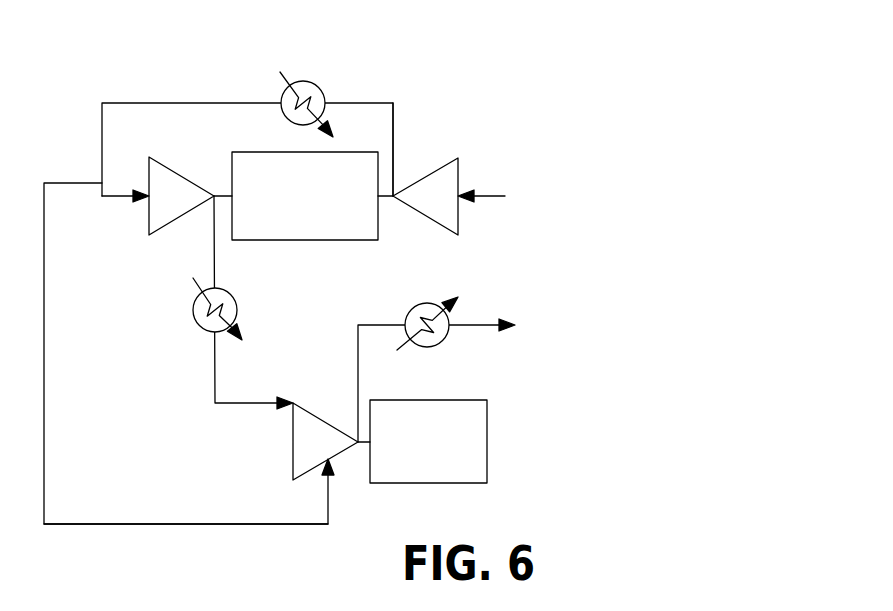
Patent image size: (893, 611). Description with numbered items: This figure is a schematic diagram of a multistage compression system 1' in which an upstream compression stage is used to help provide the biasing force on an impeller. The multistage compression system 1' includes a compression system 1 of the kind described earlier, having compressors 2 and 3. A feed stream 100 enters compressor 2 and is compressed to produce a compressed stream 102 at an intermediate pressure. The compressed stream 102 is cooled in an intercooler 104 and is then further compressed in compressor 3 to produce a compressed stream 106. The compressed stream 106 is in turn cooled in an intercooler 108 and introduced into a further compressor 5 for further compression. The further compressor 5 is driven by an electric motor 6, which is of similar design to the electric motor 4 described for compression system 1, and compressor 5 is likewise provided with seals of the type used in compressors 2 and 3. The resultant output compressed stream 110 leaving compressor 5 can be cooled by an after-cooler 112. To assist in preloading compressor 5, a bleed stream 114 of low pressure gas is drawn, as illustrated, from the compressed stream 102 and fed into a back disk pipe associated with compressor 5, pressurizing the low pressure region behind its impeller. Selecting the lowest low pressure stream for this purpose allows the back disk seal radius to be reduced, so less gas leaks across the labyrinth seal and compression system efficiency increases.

The compression system 1 is at (272, 288).
The multistage compression system 1' is at (636, 158).
The compressor 2 is at (482, 154).
The compressor 3 is at (136, 245).
The electric motor 4 is at (341, 233).
The further compressor 5 is at (276, 469).
The electric motor 6 is at (472, 433).
The feed stream 100 is at (489, 198).
The compressed stream 102 is at (393, 158).
The intercooler 104 is at (292, 88).
The compressed stream 106 is at (216, 258).
The intercooler 108 is at (199, 318).
The output compressed stream 110 is at (358, 345).
The after-cooler 112 is at (432, 345).
The bleed stream 114 is at (288, 525).